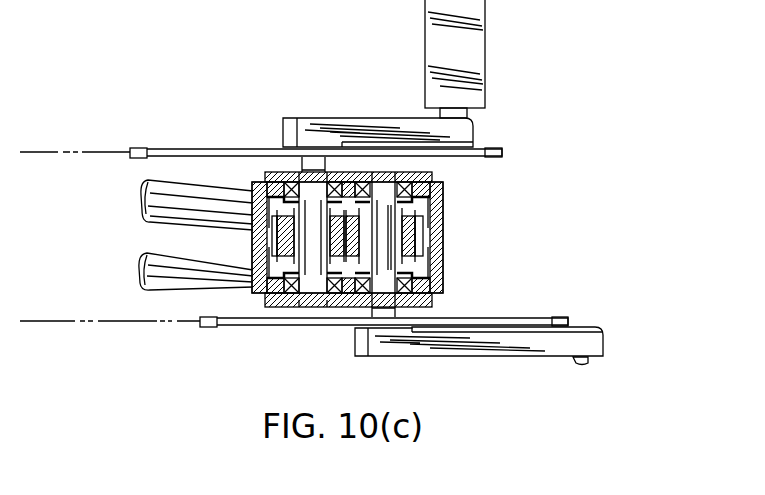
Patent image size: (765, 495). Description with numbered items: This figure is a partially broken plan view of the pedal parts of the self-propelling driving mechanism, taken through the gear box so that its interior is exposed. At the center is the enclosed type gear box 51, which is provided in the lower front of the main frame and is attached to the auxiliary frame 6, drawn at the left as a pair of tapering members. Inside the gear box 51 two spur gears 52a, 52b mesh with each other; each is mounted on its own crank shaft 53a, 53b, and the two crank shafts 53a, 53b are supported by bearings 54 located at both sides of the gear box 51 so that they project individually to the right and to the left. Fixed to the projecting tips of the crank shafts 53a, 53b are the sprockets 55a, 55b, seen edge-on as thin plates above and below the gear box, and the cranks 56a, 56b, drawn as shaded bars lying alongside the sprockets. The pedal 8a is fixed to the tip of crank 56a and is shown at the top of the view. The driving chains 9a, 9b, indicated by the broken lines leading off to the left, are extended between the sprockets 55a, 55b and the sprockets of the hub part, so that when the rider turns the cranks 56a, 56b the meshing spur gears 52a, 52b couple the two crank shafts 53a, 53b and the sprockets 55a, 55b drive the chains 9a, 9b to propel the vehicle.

The auxiliary frame 6 is at (153, 263).
The pedal 8a is at (477, 42).
The chain 9a is at (43, 150).
The chain 9b is at (43, 328).
The gear box 51 is at (237, 287).
The spur gear 52a is at (275, 227).
The spur gear 52b is at (433, 218).
The crank shaft 53a is at (302, 210).
The crank shaft 53b is at (393, 241).
The bearings 54 is at (443, 183).
The sprocket 55a is at (473, 150).
The sprocket 55b is at (521, 317).
The crank 56a is at (359, 125).
The crank 56b is at (513, 348).